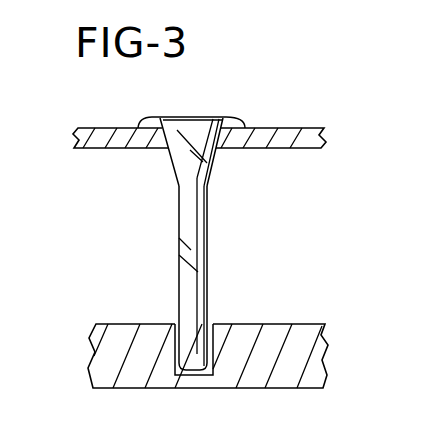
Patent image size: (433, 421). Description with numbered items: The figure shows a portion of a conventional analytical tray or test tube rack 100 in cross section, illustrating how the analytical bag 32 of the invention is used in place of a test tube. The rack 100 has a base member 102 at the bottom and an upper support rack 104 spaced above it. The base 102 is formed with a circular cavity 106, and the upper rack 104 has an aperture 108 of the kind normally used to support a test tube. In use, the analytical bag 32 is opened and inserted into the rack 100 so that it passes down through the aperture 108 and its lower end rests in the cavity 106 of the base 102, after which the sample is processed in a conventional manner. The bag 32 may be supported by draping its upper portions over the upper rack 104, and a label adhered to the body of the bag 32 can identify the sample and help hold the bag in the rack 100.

The test tube rack 100 is at (214, 208).
The upper support rack 104 is at (97, 127).
The base member 102 is at (272, 330).
The circular cavity 106 is at (178, 346).
The analytical bag 32 is at (209, 232).
The aperture 108 is at (166, 158).